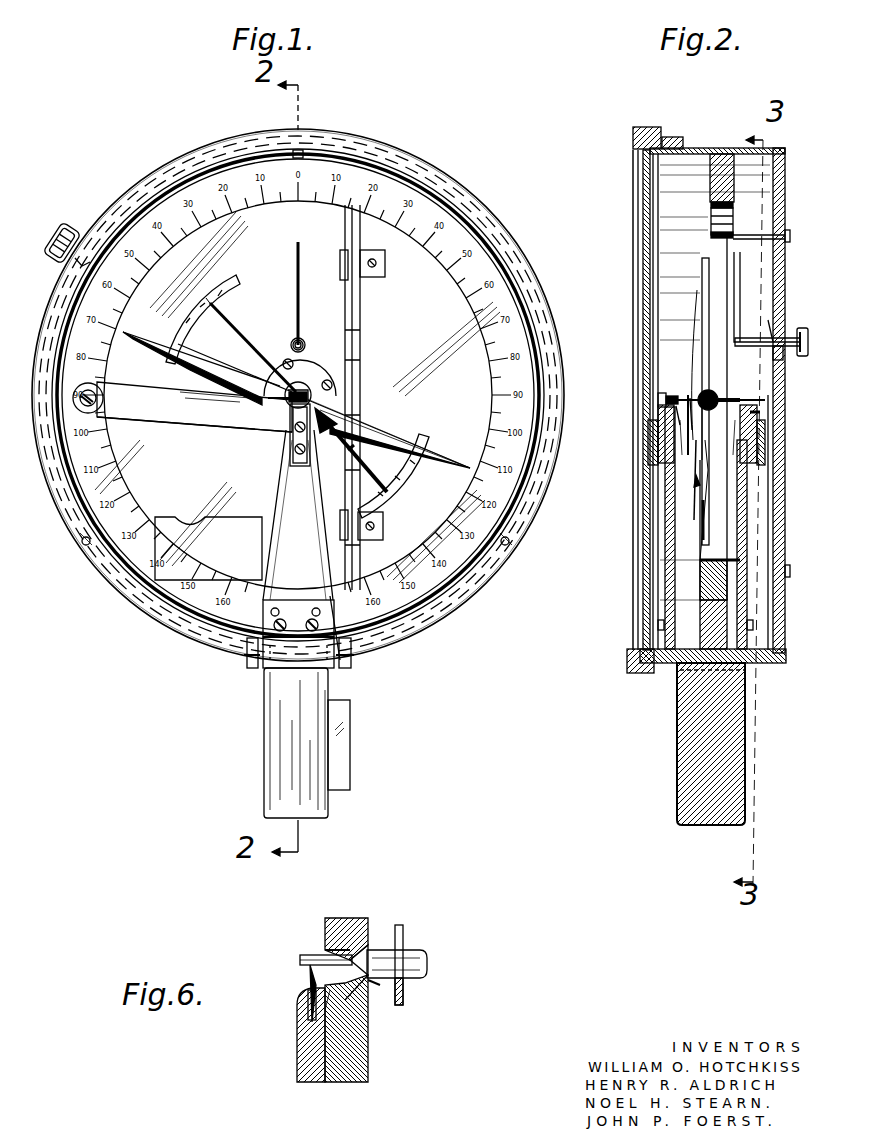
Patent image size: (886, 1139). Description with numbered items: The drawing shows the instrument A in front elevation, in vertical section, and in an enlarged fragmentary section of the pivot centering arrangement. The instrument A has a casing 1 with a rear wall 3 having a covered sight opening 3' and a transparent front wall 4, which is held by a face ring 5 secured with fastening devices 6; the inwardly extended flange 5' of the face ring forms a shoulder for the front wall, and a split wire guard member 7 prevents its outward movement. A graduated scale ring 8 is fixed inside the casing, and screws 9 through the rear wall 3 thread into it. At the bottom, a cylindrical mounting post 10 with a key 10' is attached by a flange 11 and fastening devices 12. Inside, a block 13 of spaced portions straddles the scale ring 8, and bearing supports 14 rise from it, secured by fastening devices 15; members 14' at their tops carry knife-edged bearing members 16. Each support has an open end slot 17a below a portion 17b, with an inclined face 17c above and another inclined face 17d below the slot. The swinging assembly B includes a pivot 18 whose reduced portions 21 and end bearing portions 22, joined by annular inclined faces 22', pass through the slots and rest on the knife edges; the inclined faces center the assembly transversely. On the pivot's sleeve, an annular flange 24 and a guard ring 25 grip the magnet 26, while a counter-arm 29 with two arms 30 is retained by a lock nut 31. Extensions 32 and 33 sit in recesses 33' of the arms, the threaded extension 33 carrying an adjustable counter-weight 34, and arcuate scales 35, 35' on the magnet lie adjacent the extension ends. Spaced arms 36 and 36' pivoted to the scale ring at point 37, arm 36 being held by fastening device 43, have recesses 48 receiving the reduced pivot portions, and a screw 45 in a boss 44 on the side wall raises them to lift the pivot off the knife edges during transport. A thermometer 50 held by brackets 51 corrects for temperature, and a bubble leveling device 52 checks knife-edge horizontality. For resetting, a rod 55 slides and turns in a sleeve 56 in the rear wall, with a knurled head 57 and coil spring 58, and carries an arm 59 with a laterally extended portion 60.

In FIG. 1, the casing 1 is at (530, 320).
In FIG. 2, the casing 1 is at (720, 152).
In FIG. 2, the rear wall 3 is at (789, 400).
In FIG. 1, the sight opening 3' is at (300, 367).
In FIG. 2, the sight opening 3' is at (787, 514).
In FIG. 1, the transparent front wall 4 is at (430, 275).
In FIG. 2, the transparent front wall 4 is at (650, 279).
In FIG. 1, the face ring 5 is at (298, 387).
In FIG. 2, the face ring 5 is at (657, 119).
In FIG. 1, the inwardly extended flange 5' is at (414, 628).
In FIG. 2, the inwardly extended flange 5' is at (634, 677).
In FIG. 1, the fastening devices 6 is at (305, 155).
In FIG. 2, the fastening devices 6 is at (700, 148).
In FIG. 1, the guard member 7 is at (215, 622).
In FIG. 2, the guard member 7 is at (640, 178).
In FIG. 1, the scale ring 8 is at (172, 578).
In FIG. 2, the scale ring 8 is at (711, 198).
In FIG. 2, the screws 9 is at (790, 230).
In FIG. 1, the mounting post 10 is at (271, 743).
In FIG. 2, the mounting post 10 is at (680, 752).
In FIG. 1, the key 10' is at (375, 745).
In FIG. 1, the flange 11 is at (290, 670).
In FIG. 2, the flange 11 is at (700, 670).
In FIG. 1, the fastening devices 12 is at (244, 668).
In FIG. 1, the block 13 is at (340, 620).
In FIG. 2, the block 13 is at (667, 663).
In FIG. 1, the bearing supports 14 is at (293, 515).
In FIG. 2, the bearing supports 14 is at (703, 528).
In FIG. 6, the bearing supports 14 is at (343, 1052).
In FIG. 1, the members 14' is at (278, 449).
In FIG. 2, the members 14' is at (701, 445).
In FIG. 6, the members 14' is at (285, 1035).
In FIG. 1, the fastening devices 15 is at (312, 618).
In FIG. 2, the fastening devices 15 is at (658, 626).
In FIG. 1, the bearing members 16 is at (290, 420).
In FIG. 2, the bearing members 16 is at (662, 410).
In FIG. 6, the bearing members 16 is at (310, 975).
In FIG. 1, the open end slot 17a is at (320, 392).
In FIG. 2, the open end slot 17a is at (660, 398).
In FIG. 6, the open end slot 17a is at (330, 950).
In FIG. 1, the portion above slot 17b is at (302, 382).
In FIG. 2, the portion above slot 17b is at (688, 392).
In FIG. 6, the portion above slot 17b is at (355, 918).
In FIG. 6, the inclined face 17c is at (370, 948).
In FIG. 6, the inclined face 17d is at (365, 995).
In FIG. 1, the pivot 18 is at (290, 398).
In FIG. 2, the pivot 18 is at (666, 400).
In FIG. 6, the pivot 18 is at (425, 958).
In FIG. 2, the reduced portions 21 is at (706, 437).
In FIG. 6, the reduced portions 21 is at (372, 992).
In FIG. 2, the bearing portions 22 is at (722, 385).
In FIG. 6, the bearing portions 22 is at (294, 957).
In FIG. 6, the annular inclined faces 22' is at (341, 963).
In FIG. 2, the annular flange 24 is at (715, 419).
In FIG. 2, the guard ring 25 is at (732, 398).
In FIG. 1, the magnet 26 is at (375, 430).
In FIG. 2, the magnet 26 is at (711, 224).
In FIG. 1, the counter-arm 29 is at (260, 400).
In FIG. 2, the counter-arm 29 is at (708, 392).
In FIG. 1, the arms 30 is at (295, 392).
In FIG. 1, the lock nut 31 is at (312, 402).
In FIG. 1, the counter-arm extension 32 is at (230, 323).
In FIG. 2, the counter-arm extension 32 is at (702, 360).
In FIG. 1, the counter-arm extension 33 is at (359, 452).
In FIG. 2, the counter-arm extension 33 is at (652, 520).
In FIG. 1, the recesses 33' is at (218, 411).
In FIG. 1, the counter-weight 34 is at (395, 440).
In FIG. 2, the counter-weight 34 is at (690, 486).
In FIG. 1, the arcuate scales 35 is at (205, 301).
In FIG. 2, the arcuate scales 35 is at (657, 396).
In FIG. 1, the arcuate scale 35' is at (406, 476).
In FIG. 1, the arm 36 is at (194, 438).
In FIG. 2, the arm 36 is at (682, 389).
In FIG. 2, the arm 36' is at (783, 424).
In FIG. 1, the pivot point 37 is at (105, 392).
In FIG. 1, the fastening device 43 is at (103, 403).
In FIG. 1, the boss 44 is at (80, 255).
In FIG. 1, the screw 45 is at (58, 232).
In FIG. 6, the recesses 48 is at (404, 935).
In FIG. 1, the thermometer 50 is at (362, 330).
In FIG. 1, the brackets 51 is at (386, 270).
In FIG. 1, the leveling device 52 is at (208, 548).
In FIG. 1, the rod 55 is at (303, 338).
In FIG. 2, the rod 55 is at (765, 342).
In FIG. 1, the sleeve 56 is at (294, 338).
In FIG. 2, the sleeve 56 is at (773, 335).
In FIG. 2, the knurled head 57 is at (803, 328).
In FIG. 2, the coil spring 58 is at (783, 355).
In FIG. 1, the arm 59 is at (296, 275).
In FIG. 2, the arm 59 is at (740, 282).
In FIG. 2, the laterally extended portion 60 is at (742, 235).
In FIG. 1, the instrument A is at (152, 158).
In FIG. 2, the instrument A is at (600, 146).
In FIG. 1, the swinging assembly B is at (215, 358).
In FIG. 2, the swinging assembly B is at (680, 300).